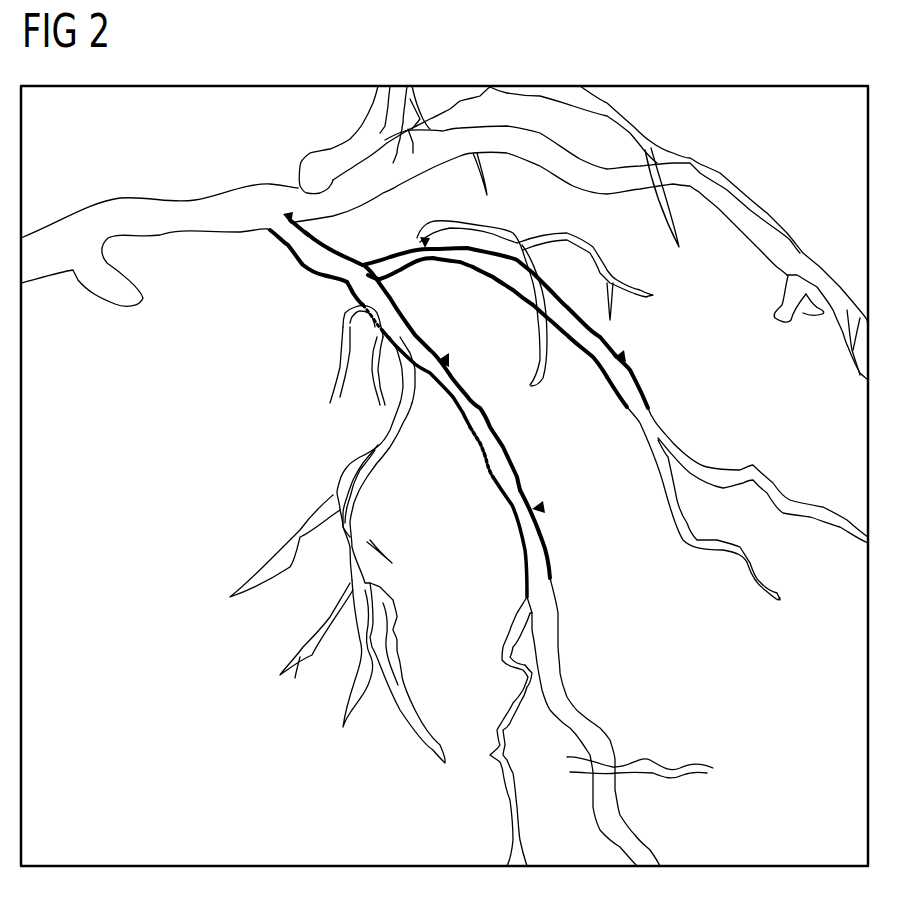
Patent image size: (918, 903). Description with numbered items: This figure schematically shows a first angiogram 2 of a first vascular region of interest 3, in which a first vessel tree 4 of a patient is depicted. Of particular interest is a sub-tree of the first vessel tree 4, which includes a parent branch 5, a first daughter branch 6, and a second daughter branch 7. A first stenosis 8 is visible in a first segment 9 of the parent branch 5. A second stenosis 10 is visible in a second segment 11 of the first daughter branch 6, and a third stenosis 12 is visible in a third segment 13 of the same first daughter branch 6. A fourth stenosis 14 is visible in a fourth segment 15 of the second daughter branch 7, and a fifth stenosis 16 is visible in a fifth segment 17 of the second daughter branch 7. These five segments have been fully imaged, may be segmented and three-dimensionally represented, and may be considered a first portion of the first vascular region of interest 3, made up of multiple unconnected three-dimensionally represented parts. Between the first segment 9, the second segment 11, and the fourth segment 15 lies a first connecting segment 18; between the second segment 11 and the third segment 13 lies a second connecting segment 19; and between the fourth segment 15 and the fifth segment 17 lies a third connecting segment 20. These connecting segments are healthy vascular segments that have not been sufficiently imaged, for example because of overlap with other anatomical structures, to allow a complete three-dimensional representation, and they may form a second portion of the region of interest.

The first angiogram 2 is at (444, 445).
The first vascular region of interest 3 is at (773, 70).
The first vessel tree 4 is at (143, 208).
The parent branch 5 is at (313, 263).
The first daughter branch 6 is at (397, 332).
The second daughter branch 7 is at (500, 258).
The first stenosis 8 is at (288, 213).
The first segment 9 is at (285, 248).
The second stenosis 10 is at (452, 358).
The second segment 11 is at (470, 393).
The third stenosis 12 is at (543, 508).
The third segment 13 is at (523, 550).
The fourth stenosis 14 is at (422, 238).
The fourth segment 15 is at (447, 262).
The fifth stenosis 16 is at (624, 354).
The fifth segment 17 is at (642, 385).
The first connecting segment 18 is at (342, 285).
The second connecting segment 19 is at (488, 463).
The third connecting segment 20 is at (582, 337).